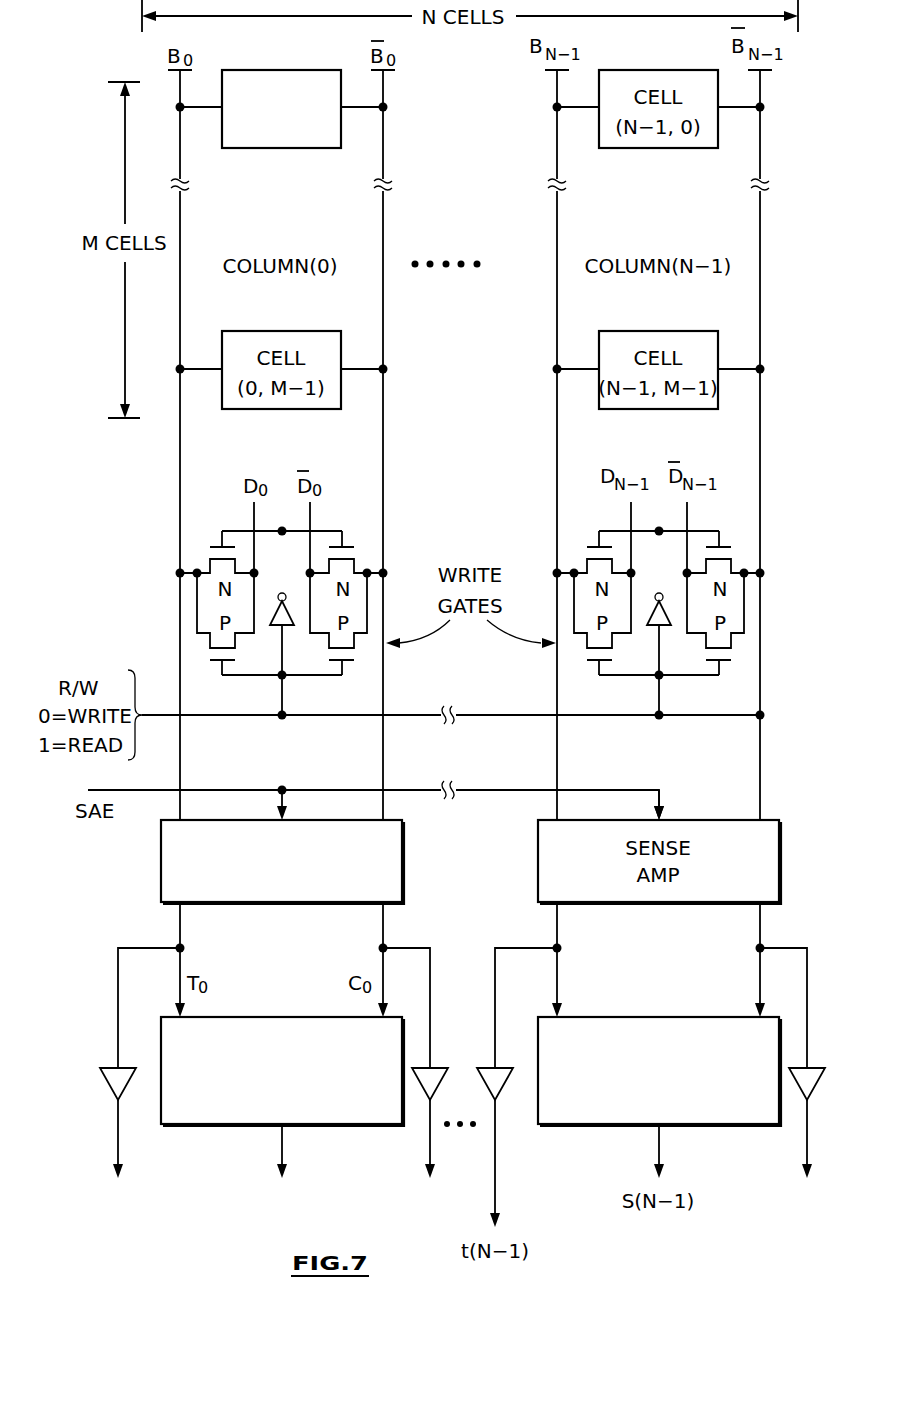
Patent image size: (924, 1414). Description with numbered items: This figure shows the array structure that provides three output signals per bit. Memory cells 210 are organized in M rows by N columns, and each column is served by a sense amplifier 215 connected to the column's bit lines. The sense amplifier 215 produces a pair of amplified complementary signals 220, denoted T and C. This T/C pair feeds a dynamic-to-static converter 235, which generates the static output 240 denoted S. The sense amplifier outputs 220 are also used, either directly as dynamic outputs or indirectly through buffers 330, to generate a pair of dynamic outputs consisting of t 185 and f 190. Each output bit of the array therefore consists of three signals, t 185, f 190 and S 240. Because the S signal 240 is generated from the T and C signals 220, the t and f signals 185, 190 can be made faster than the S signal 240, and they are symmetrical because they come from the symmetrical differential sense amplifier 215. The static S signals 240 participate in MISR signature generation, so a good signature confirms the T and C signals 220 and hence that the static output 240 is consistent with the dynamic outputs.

The memory cells 210 is at (270, 163).
The sense amplifier 215 is at (150, 862).
The sense amplifier outputs 220 is at (677, 961).
The dynamic-to-static converter 235 is at (304, 1113).
The static output 240 is at (266, 1151).
The dynamic output t 185 is at (118, 1150).
The dynamic output f 190 is at (430, 1151).
The buffers 330 is at (112, 1090).